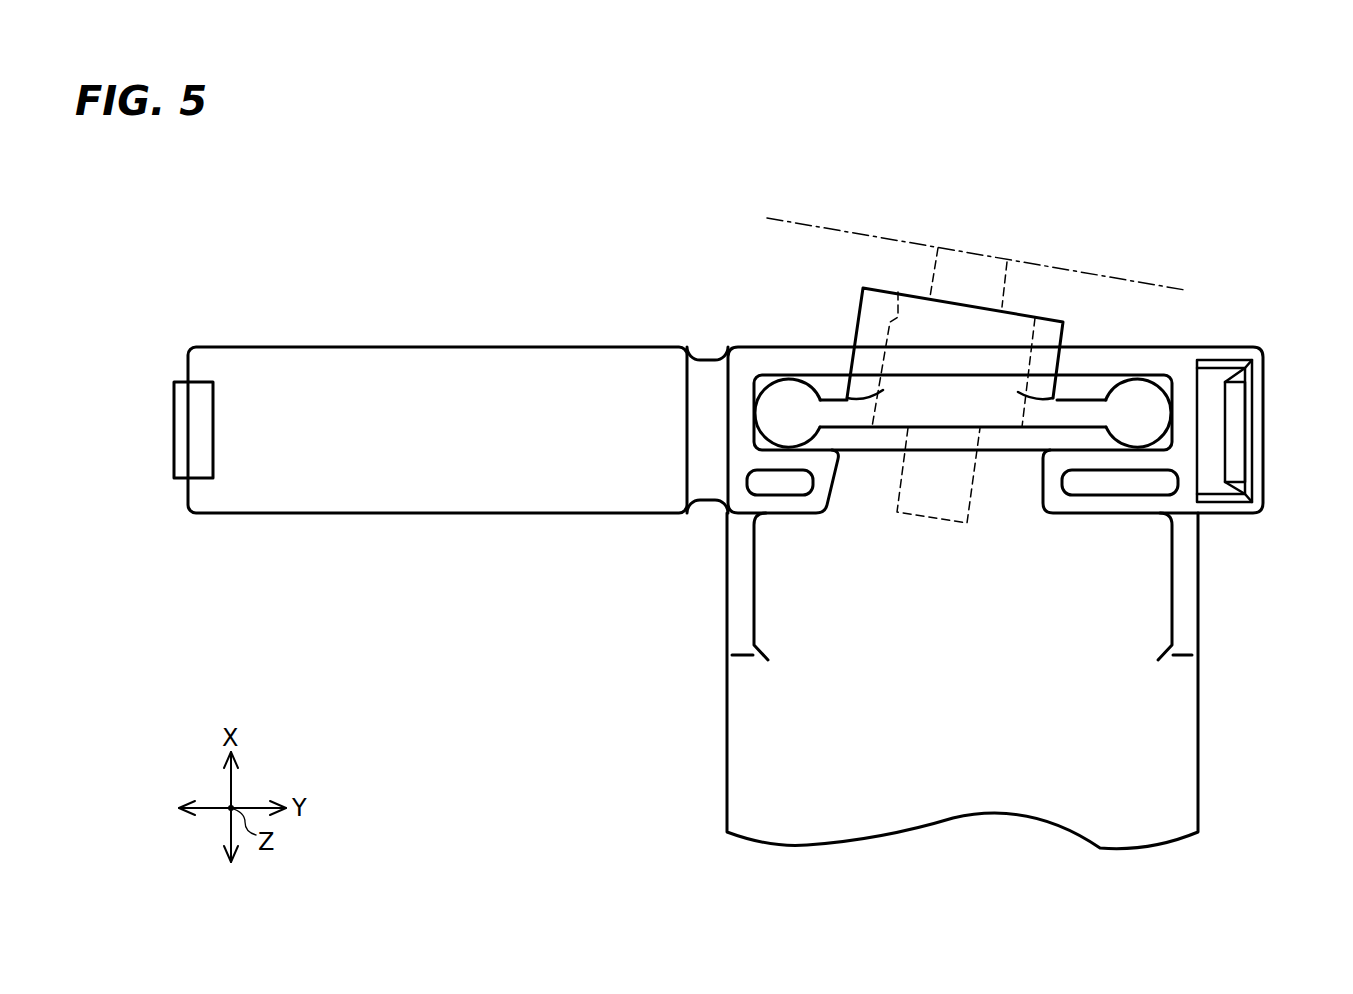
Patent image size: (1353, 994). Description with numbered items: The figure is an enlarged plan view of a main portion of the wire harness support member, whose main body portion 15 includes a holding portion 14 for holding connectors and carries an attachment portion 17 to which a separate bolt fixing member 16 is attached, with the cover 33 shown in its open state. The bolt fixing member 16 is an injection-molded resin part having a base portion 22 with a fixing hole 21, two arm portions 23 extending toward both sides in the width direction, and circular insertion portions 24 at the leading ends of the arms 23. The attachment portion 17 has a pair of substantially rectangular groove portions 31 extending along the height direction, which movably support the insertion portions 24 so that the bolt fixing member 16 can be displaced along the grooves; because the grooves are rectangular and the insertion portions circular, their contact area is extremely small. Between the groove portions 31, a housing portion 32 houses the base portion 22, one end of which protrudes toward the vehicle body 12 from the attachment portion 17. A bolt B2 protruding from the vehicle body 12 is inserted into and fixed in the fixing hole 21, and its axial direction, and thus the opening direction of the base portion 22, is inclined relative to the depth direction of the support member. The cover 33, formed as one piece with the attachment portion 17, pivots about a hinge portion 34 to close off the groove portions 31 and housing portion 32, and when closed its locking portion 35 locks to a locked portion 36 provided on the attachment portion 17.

The vehicle body 12 is at (786, 228).
The holding portion 14 is at (1172, 735).
The main body portion 15 is at (1199, 590).
The bolt fixing member 16 is at (870, 290).
The attachment portion 17 is at (1116, 515).
The fixing hole 21 is at (898, 292).
The base portion 22 is at (1013, 330).
The arm portion 23 is at (852, 418).
The insertion portion 24 is at (794, 395).
The groove portion 31 is at (758, 383).
The housing portion 32 is at (1052, 353).
The cover 33 is at (414, 358).
The hinge portion 34 is at (693, 430).
The locking portion 35 is at (209, 427).
The locked portion 36 is at (1230, 438).
The bolt B2 is at (926, 523).